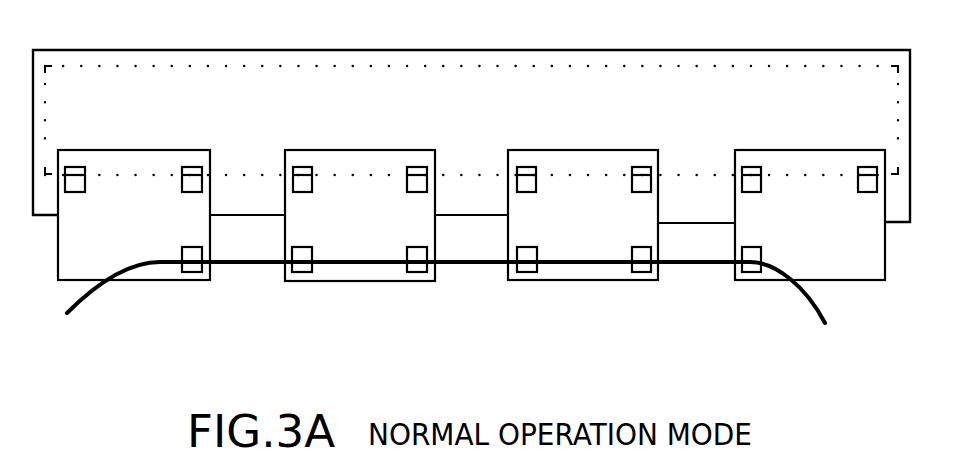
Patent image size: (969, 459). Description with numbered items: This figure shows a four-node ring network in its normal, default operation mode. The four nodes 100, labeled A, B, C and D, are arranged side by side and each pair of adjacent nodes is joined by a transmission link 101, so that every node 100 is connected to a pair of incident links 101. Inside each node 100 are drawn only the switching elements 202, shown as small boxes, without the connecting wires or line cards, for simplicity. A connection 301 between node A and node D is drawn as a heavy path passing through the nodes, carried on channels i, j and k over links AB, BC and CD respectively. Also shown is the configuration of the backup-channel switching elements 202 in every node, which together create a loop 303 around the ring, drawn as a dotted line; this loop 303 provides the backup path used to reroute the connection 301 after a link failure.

The transmission link 101 is at (471, 117).
The loop 303 is at (471, 120).
The node 100 is at (471, 217).
The switching element 202 is at (469, 219).
The connection 301 is at (446, 314).